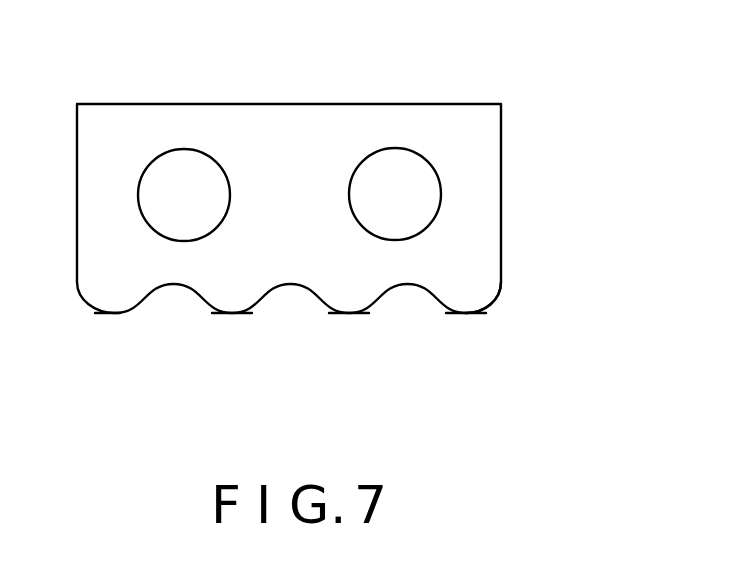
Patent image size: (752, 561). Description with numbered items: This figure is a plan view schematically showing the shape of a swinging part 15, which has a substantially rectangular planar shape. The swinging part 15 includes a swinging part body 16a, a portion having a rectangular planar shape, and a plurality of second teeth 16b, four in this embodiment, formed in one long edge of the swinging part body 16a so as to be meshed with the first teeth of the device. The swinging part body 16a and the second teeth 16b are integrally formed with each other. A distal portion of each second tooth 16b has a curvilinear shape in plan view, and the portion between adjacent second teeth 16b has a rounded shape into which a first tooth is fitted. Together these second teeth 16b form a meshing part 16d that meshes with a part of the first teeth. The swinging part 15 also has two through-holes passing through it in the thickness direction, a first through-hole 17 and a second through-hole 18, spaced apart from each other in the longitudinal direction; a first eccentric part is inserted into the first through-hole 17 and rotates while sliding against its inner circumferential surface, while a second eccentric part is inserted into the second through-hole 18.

The swinging part 15 is at (437, 98).
The swinging part body 16a is at (460, 236).
The second teeth 16b is at (115, 313).
The meshing part 16d is at (501, 348).
The first through-hole 17 is at (430, 164).
The second through-hole 18 is at (148, 163).